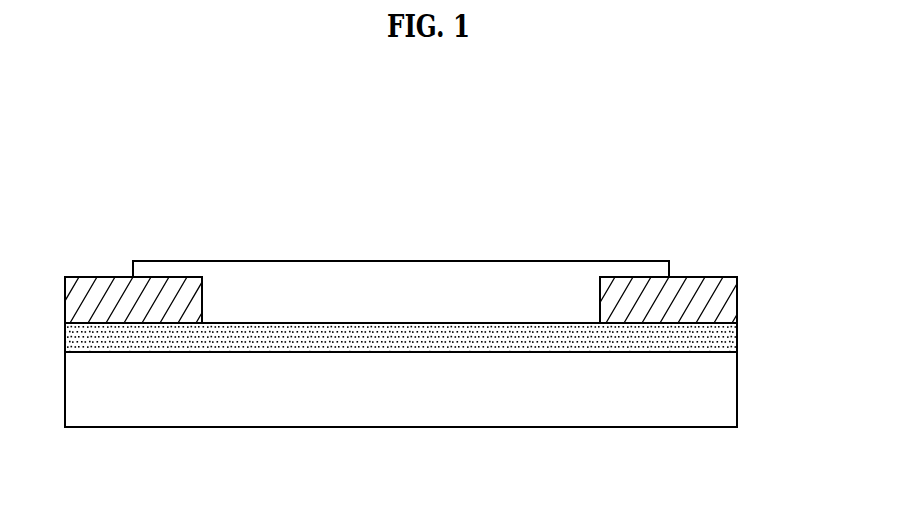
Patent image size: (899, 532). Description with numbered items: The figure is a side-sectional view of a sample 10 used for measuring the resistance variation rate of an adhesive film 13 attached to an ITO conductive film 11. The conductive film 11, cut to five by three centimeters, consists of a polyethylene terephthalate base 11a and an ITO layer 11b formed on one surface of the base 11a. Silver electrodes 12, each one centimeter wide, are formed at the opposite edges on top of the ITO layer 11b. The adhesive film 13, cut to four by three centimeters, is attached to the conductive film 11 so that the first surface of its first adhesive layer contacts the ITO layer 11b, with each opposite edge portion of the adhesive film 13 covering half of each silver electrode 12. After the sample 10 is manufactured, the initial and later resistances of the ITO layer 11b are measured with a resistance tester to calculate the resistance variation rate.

The sample 10 is at (569, 184).
The conductive film 11 is at (744, 325).
The polyethylene terephthalate (PET) base 11a is at (648, 432).
The ITO layer 11b is at (483, 365).
The silver electrode 12 is at (96, 263).
The adhesive film 13 is at (353, 281).